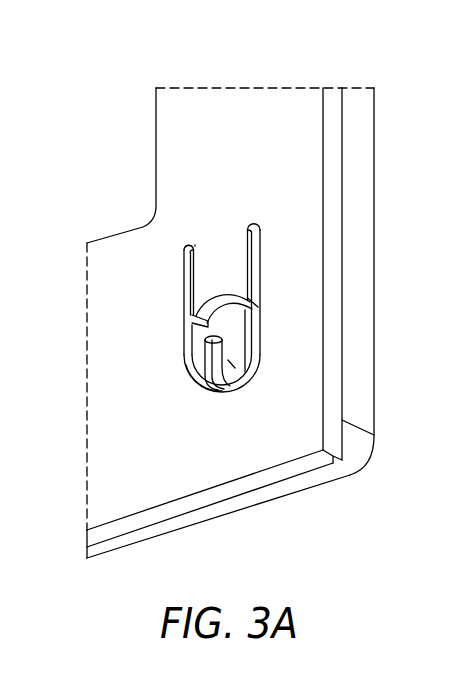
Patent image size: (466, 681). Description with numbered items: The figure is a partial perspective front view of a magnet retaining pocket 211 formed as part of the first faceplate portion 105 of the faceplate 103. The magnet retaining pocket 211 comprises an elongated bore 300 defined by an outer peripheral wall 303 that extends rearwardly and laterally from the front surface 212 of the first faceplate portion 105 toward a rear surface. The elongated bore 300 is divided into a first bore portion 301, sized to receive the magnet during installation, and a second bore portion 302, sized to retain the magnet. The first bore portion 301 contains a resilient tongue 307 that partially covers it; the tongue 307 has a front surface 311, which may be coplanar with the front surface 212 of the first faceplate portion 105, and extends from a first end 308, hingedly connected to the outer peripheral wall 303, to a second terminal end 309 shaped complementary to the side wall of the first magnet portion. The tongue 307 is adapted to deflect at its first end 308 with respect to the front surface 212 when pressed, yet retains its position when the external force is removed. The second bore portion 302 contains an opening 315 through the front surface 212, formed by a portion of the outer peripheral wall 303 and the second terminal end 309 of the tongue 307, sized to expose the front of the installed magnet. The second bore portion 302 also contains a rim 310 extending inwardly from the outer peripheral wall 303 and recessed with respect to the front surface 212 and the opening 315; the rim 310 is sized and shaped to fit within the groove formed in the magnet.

The faceplate 103 is at (361, 130).
The first faceplate portion 105 is at (243, 105).
The magnet retaining pocket 211 is at (235, 368).
The front surface 212 is at (125, 418).
The elongated bore 300 is at (186, 342).
The first bore portion 301 is at (187, 295).
The second bore portion 302 is at (191, 350).
The outer peripheral wall 303 is at (196, 332).
The resilient tongue 307 is at (235, 265).
The first end 308 is at (225, 237).
The second terminal end 309 is at (252, 310).
The rim 310 is at (205, 378).
The front surface of the tongue 311 is at (185, 258).
The opening 315 is at (256, 355).